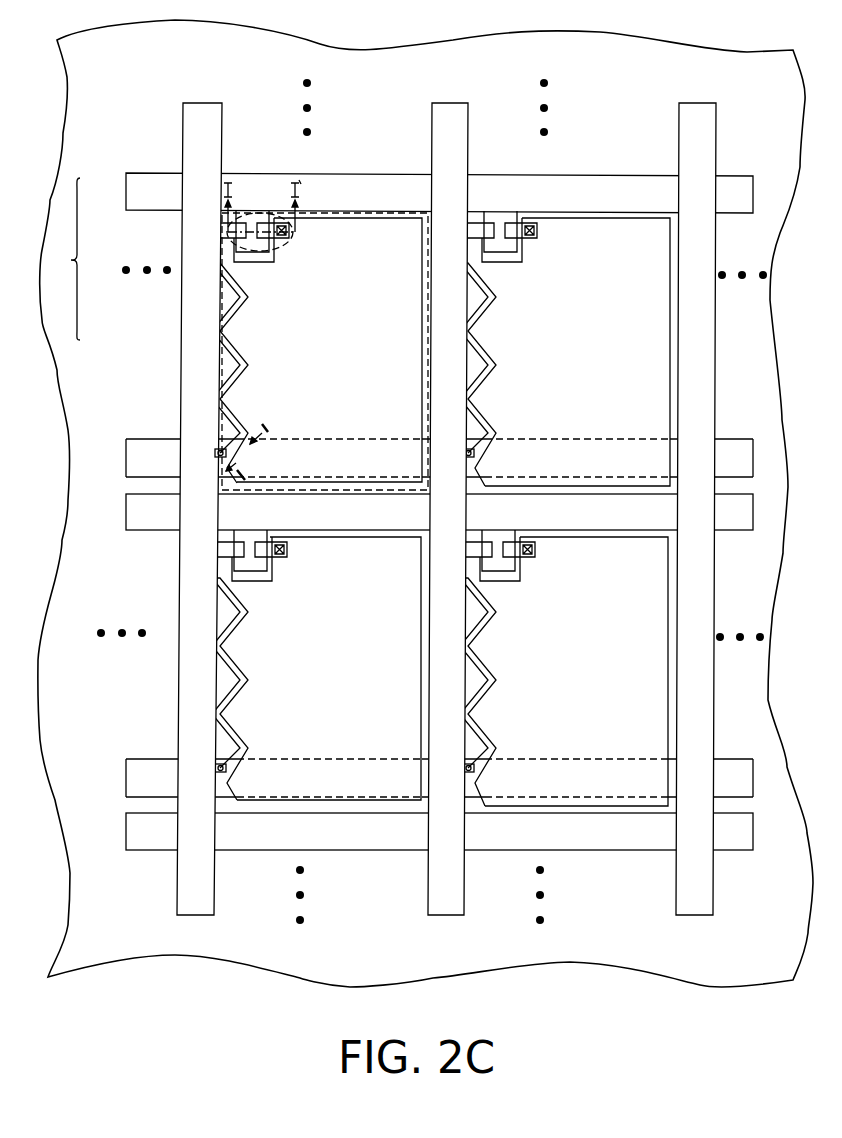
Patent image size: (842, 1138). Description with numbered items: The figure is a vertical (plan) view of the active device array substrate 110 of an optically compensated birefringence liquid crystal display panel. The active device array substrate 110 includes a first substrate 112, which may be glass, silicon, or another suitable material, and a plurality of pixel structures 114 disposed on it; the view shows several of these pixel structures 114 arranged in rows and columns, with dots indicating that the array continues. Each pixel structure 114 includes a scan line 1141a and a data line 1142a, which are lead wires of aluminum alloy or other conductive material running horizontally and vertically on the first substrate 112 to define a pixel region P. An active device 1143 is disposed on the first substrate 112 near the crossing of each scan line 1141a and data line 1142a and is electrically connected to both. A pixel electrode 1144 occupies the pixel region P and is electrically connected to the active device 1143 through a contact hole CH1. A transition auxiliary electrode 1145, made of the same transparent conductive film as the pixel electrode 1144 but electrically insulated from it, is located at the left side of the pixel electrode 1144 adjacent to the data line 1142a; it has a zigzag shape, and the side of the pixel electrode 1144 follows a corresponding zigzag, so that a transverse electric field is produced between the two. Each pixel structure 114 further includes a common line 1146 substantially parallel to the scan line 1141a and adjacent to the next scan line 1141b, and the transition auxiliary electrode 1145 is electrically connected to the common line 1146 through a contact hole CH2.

The active device array substrate 110 is at (785, 1036).
The first substrate 112 is at (723, 68).
The pixel structure 114 is at (64, 259).
The scan line 1141a is at (138, 197).
The next scan line 1141b is at (130, 515).
The data line 1142a is at (192, 230).
The active device 1143 is at (233, 247).
The pixel electrode 1144 is at (235, 325).
The transition auxiliary electrode 1145 is at (232, 293).
The common line 1146 is at (150, 442).
The contact hole CH1 is at (264, 230).
The contact hole CH2 is at (220, 455).
The pixel region P is at (340, 212).